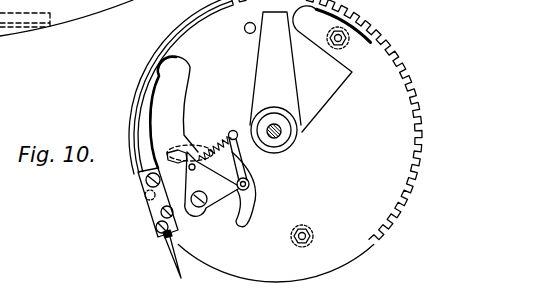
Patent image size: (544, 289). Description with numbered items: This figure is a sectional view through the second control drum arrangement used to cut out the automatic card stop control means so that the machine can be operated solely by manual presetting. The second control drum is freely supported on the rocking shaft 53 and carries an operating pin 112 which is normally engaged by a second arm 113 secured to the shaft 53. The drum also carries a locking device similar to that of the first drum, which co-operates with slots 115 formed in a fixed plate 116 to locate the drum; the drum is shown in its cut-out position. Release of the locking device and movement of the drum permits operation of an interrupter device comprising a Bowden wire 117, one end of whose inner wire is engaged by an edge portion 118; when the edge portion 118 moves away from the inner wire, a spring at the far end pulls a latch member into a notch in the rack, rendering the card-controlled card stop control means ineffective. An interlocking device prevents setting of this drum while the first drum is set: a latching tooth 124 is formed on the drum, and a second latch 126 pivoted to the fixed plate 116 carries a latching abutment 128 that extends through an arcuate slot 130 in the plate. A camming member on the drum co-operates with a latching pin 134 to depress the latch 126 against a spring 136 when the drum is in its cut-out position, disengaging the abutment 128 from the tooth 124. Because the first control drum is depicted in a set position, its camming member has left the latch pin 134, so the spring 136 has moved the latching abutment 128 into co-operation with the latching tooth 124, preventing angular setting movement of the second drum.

The rocking shaft 53 is at (276, 138).
The operating pin 112 is at (244, 28).
The second arm 113 is at (257, 43).
The slots 115 is at (392, 52).
The fixed plate 116 is at (367, 244).
The Bowden wire 117 is at (163, 238).
The edge portion 118 is at (138, 175).
The latching tooth 124 is at (183, 170).
The second latch 126 is at (161, 213).
The latching abutment 128 is at (150, 184).
The arcuate slot 130 is at (249, 218).
The latching pin 134 is at (254, 198).
The spring 136 is at (250, 185).